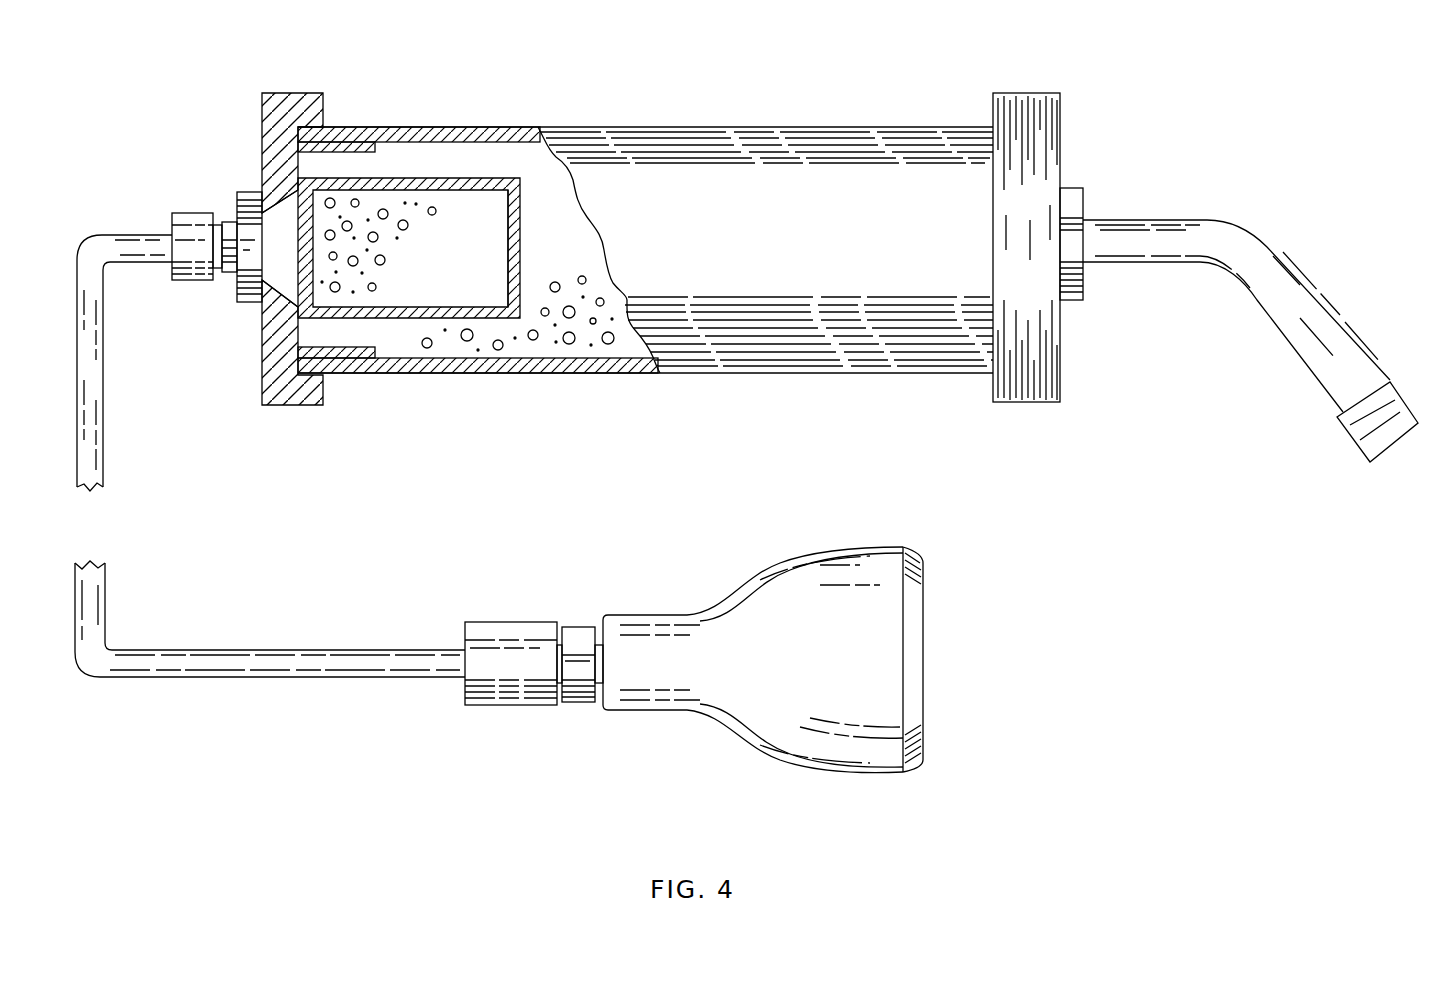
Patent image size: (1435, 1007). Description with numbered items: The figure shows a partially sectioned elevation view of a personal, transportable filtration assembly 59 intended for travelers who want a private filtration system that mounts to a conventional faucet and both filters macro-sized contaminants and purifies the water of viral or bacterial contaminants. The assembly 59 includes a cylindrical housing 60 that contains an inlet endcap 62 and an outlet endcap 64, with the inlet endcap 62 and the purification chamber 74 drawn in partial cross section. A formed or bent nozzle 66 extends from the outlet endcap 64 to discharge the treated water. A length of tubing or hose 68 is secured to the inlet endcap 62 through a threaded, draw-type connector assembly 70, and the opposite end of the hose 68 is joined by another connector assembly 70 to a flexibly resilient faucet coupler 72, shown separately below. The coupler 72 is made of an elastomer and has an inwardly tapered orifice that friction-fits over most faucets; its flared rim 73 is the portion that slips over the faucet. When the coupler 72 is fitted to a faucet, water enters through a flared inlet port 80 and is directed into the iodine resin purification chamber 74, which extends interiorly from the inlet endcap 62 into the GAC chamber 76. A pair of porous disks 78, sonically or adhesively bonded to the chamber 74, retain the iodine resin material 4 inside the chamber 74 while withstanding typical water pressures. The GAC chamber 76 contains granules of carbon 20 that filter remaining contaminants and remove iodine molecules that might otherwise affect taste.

The iodine resin material 4 is at (378, 245).
The granules of carbon 20 is at (572, 344).
The assembly 59 is at (745, 103).
The cylindrical housing 60 is at (665, 126).
The inlet endcap 62 is at (262, 103).
The outlet endcap 64 is at (1062, 139).
The nozzle 66 is at (1266, 246).
The tubing or hose 68 is at (107, 423).
The connector assembly 70 is at (190, 213).
The faucet coupler 72 is at (801, 668).
The funnel rim 73 is at (925, 657).
The purification chamber 74 is at (420, 179).
The GAC chamber 76 is at (568, 257).
The porous disks 78 is at (510, 236).
The flared inlet port 80 is at (283, 203).